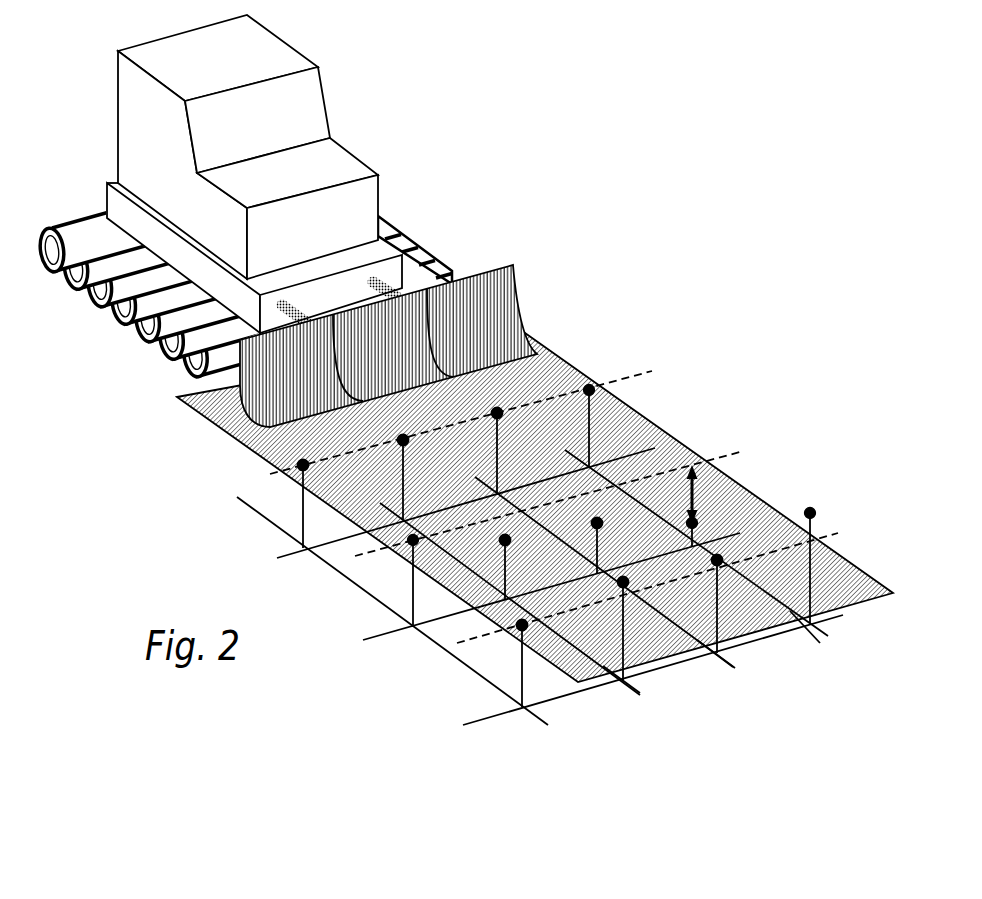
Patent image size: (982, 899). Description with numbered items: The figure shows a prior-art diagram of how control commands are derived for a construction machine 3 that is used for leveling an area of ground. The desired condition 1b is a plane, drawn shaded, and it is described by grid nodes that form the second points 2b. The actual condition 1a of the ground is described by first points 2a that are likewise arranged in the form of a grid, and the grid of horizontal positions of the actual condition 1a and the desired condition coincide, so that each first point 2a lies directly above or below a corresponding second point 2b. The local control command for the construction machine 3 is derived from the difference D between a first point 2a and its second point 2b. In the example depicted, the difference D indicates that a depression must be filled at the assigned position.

The actual condition 1a is at (383, 636).
The desired condition 1b is at (623, 442).
The first points 2a is at (733, 487).
The second points 2b is at (700, 455).
The difference D is at (710, 470).
The construction machine 3 is at (333, 170).